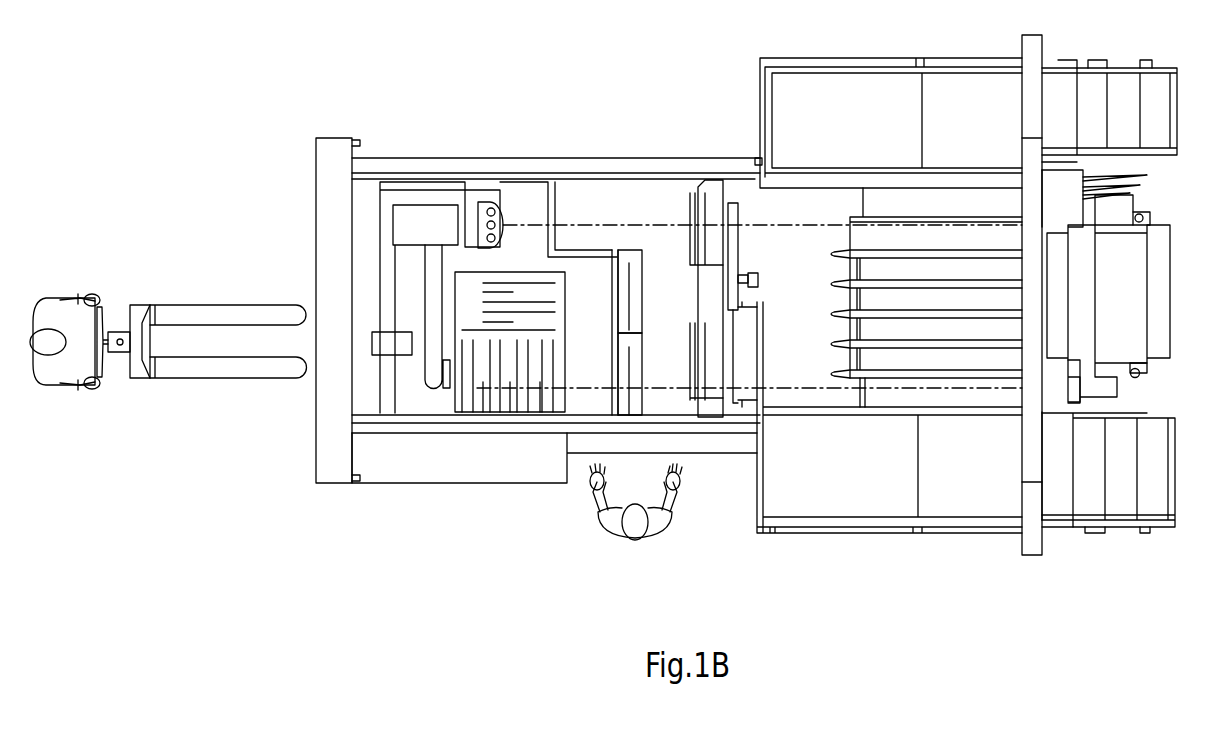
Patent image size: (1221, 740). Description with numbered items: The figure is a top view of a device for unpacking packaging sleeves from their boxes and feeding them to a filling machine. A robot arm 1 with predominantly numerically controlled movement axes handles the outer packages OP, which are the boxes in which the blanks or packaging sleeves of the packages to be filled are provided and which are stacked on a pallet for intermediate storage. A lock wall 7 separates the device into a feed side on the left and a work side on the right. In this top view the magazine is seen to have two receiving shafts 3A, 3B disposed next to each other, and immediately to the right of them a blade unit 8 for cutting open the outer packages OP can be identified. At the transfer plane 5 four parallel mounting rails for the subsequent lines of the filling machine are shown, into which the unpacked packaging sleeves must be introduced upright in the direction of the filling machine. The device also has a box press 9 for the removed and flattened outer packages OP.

The robot arm 1 is at (470, 450).
The outer packages OP is at (470, 287).
The box press 9 is at (523, 198).
The lock wall 7 is at (612, 287).
The receiving shaft 3A is at (637, 273).
The receiving shaft 3B is at (637, 368).
The blade unit 8 is at (740, 267).
The transfer plane 5 is at (822, 238).